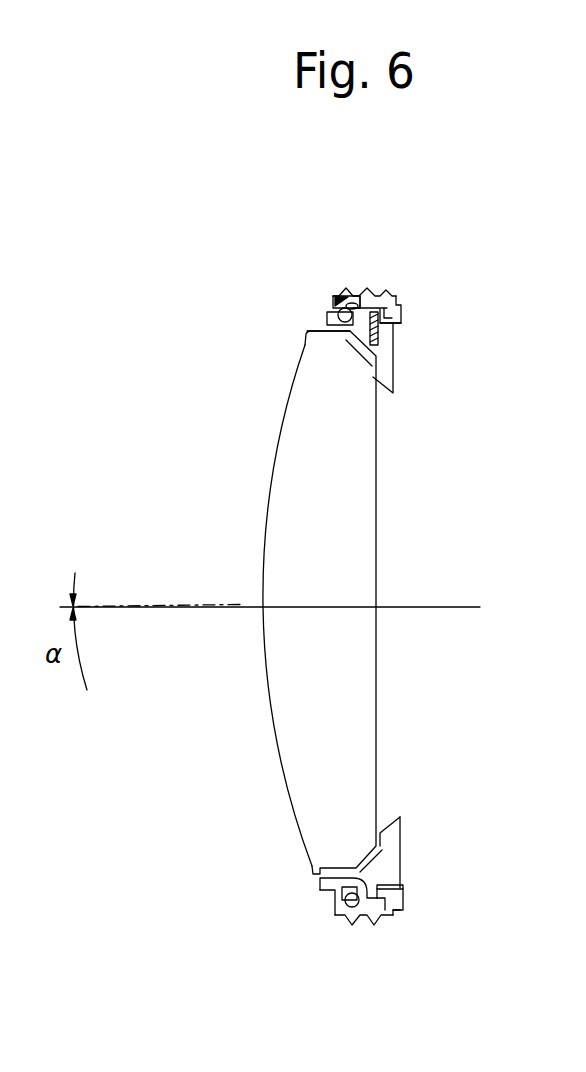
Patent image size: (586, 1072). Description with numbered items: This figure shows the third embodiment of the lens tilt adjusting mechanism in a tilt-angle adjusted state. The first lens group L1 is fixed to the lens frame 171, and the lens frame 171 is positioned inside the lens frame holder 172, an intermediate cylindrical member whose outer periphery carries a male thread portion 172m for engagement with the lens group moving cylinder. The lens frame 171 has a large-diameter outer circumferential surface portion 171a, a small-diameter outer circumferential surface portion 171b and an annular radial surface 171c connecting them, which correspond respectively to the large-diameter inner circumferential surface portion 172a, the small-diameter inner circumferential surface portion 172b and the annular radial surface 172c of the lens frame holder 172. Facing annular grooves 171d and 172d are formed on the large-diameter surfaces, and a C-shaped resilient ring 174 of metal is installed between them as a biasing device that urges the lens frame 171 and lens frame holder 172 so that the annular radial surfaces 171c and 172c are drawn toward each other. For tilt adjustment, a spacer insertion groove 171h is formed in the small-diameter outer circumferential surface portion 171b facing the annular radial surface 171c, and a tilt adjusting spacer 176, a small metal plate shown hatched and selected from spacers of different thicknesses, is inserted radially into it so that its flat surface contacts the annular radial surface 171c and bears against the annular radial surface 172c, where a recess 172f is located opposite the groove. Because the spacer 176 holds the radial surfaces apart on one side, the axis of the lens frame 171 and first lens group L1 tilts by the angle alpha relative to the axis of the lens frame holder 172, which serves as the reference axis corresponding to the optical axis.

The first lens group L1 is at (300, 670).
The lens frame 171 is at (388, 358).
The large-diameter outer circumferential surface portion 171a is at (337, 907).
The small-diameter outer circumferential surface portion 171b is at (387, 890).
The annular radial surface 171c is at (393, 907).
The annular groove 171d is at (323, 318).
The spacer insertion groove 171h is at (378, 325).
The lens frame holder 172 is at (398, 296).
The large-diameter inner circumferential surface portion 172a is at (330, 882).
The small-diameter inner circumferential surface portion 172b is at (380, 882).
The annular radial surface 172c is at (377, 920).
The annular groove 172d is at (347, 302).
The recess 172f is at (400, 317).
The male thread portion 172m is at (363, 293).
The C-shaped resilient ring 174 is at (333, 305).
The tilt adjusting spacer 176 is at (340, 338).